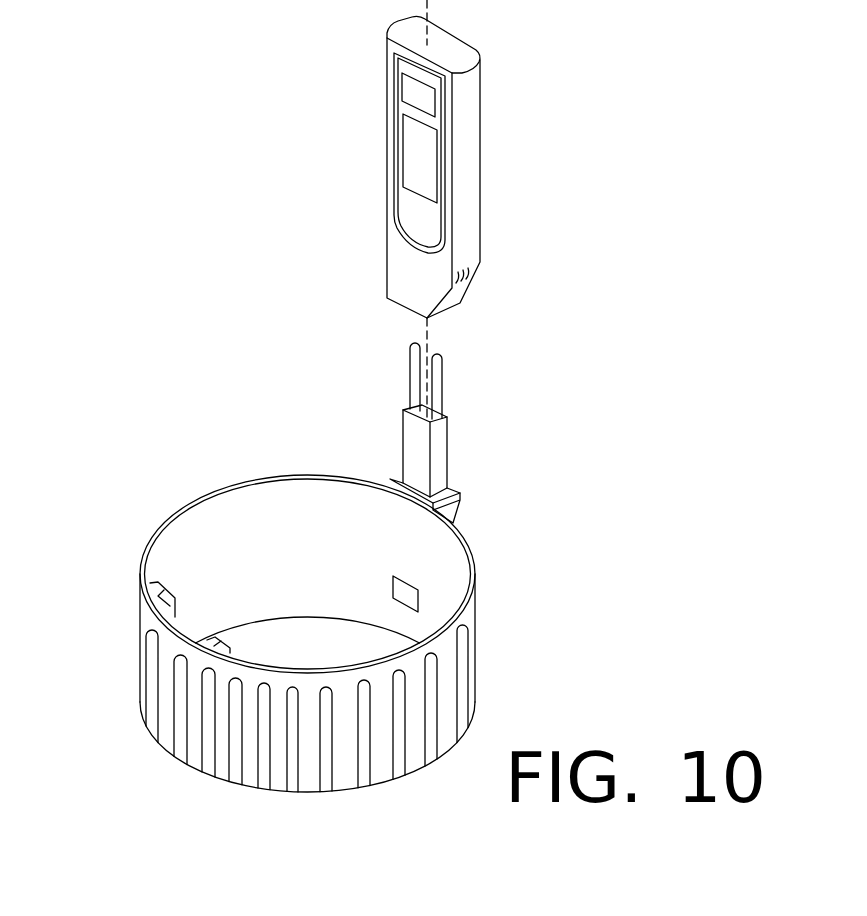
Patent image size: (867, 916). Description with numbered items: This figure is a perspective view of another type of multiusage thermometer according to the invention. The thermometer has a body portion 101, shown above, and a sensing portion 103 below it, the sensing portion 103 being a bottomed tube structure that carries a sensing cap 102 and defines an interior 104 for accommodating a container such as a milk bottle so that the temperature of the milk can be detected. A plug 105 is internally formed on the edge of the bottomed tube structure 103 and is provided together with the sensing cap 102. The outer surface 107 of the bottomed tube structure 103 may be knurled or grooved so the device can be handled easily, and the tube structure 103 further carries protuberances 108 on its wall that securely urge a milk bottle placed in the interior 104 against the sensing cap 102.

The body portion 101 is at (482, 143).
The sensing cap 102 is at (422, 588).
The sensing portion 103 is at (477, 635).
The interior 104 is at (290, 570).
The plug 105 is at (440, 398).
The outer surface 107 is at (450, 694).
The protuberances 108 is at (148, 582).